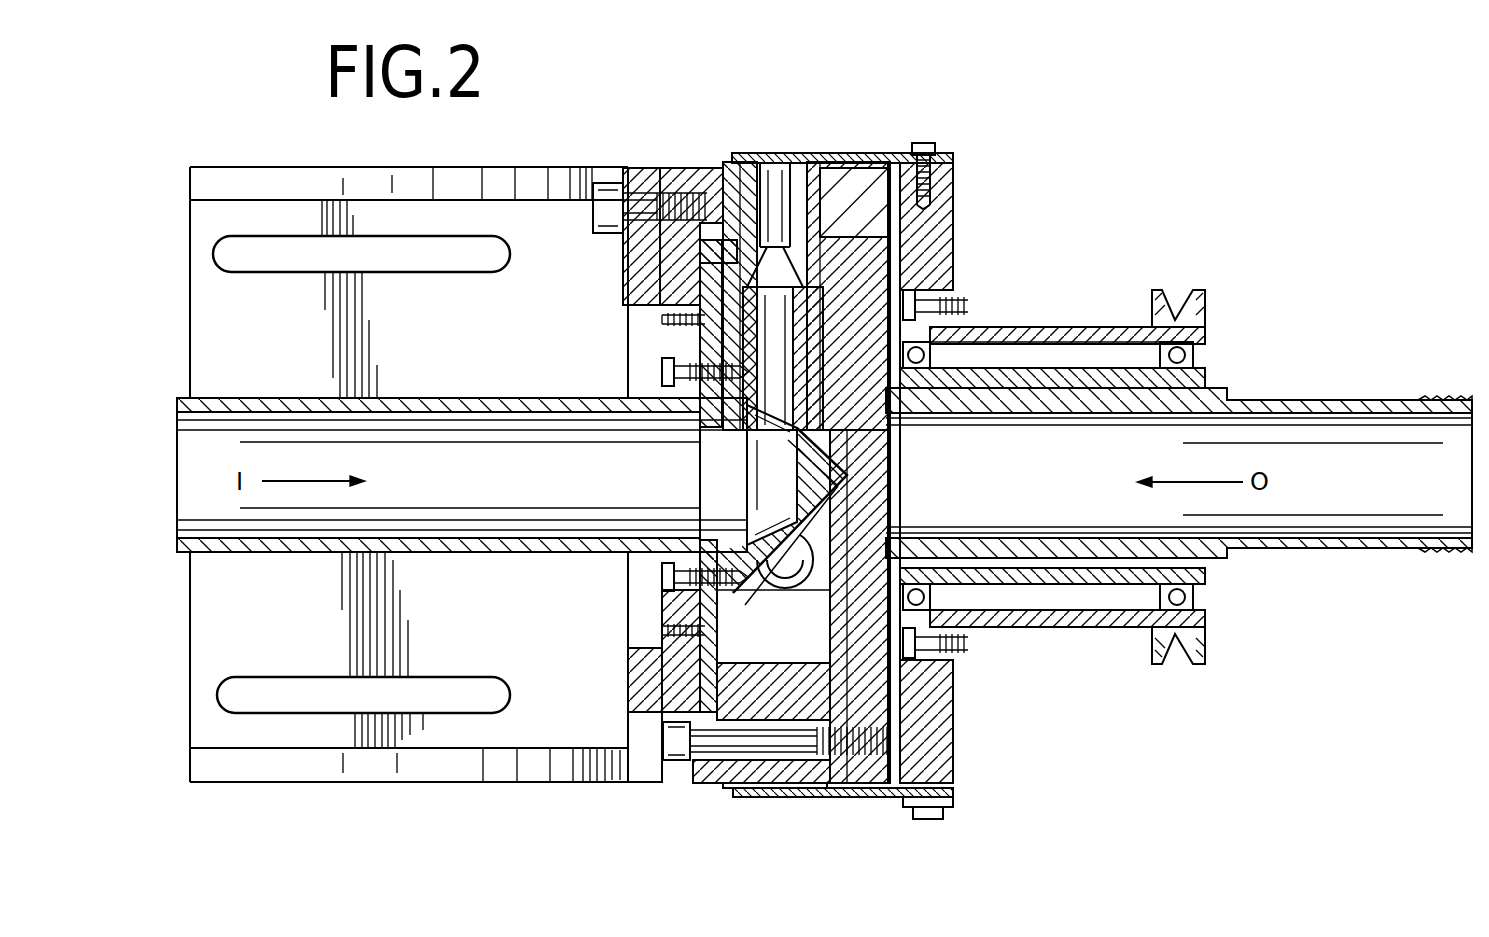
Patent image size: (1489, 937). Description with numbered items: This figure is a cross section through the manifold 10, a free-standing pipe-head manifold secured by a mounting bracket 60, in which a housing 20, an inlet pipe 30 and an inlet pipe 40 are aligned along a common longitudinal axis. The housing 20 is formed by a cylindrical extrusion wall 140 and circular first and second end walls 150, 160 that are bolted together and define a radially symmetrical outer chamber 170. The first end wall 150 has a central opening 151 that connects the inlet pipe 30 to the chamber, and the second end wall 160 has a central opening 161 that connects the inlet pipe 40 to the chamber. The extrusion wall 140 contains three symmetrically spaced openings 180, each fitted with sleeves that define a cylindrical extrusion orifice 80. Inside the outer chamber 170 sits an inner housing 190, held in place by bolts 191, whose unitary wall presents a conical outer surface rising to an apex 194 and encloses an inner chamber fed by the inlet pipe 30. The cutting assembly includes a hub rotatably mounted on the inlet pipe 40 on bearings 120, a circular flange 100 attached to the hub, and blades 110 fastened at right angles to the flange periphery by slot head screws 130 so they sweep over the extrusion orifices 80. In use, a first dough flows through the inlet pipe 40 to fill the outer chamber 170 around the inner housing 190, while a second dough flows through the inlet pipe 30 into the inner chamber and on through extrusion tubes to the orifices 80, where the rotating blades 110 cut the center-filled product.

The manifold 10 is at (1101, 80).
The housing 20 is at (704, 782).
The inlet pipe 30 is at (487, 398).
The inlet pipe 40 is at (1350, 405).
The mounting bracket 60 is at (450, 733).
The extrusion orifice 80 is at (768, 190).
The flange 100 is at (945, 742).
The blades 110 is at (862, 153).
The bearings 120 is at (916, 353).
The slot head screws 130 is at (923, 148).
The extrusion wall 140 is at (752, 787).
The first end wall 150 is at (670, 270).
The opening 151 is at (673, 536).
The second end wall 160 is at (843, 198).
The opening 161 is at (877, 402).
The outer chamber 170 is at (752, 620).
The openings 180 is at (723, 166).
The inner housing 190 is at (808, 530).
The bolts 191 is at (648, 373).
The apex 194 is at (847, 476).